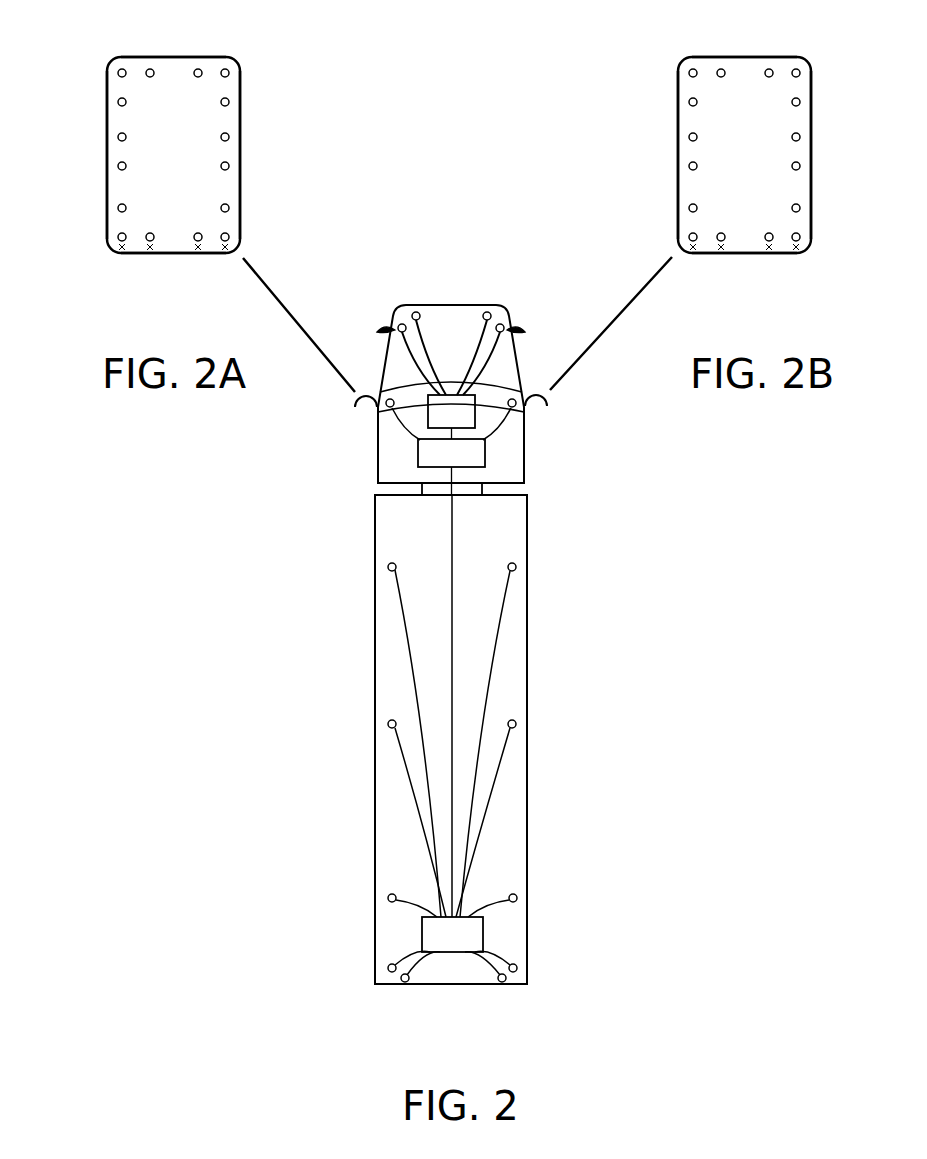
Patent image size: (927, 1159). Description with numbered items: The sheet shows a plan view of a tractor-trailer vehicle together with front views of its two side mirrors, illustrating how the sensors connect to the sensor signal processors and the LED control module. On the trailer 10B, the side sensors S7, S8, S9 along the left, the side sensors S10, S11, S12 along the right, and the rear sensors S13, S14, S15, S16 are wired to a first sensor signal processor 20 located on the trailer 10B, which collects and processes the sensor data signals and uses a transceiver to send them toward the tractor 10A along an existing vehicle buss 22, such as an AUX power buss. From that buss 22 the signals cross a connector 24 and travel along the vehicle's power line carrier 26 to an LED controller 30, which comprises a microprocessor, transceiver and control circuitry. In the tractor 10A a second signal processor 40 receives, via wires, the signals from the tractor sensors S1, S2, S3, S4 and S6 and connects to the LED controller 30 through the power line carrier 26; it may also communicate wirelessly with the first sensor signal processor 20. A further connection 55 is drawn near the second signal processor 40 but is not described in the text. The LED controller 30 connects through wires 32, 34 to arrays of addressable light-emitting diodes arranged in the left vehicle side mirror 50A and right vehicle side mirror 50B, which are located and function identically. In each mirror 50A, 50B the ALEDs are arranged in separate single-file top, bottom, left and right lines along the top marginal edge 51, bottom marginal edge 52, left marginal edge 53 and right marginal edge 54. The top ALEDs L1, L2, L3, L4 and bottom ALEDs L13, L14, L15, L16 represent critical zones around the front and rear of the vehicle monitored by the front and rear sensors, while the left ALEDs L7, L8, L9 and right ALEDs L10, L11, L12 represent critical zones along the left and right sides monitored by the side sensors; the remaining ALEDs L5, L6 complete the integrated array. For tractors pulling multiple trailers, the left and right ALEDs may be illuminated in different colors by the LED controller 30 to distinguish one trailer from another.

In FIG. 2A, the addressable light-emitting diode L1 is at (116, 72).
In FIG. 2B, the addressable light-emitting diode L1 is at (650, 53).
In FIG. 2A, the addressable light-emitting diode L2 is at (148, 68).
In FIG. 2B, the addressable light-emitting diode L2 is at (705, 44).
In FIG. 2A, the addressable light-emitting diode L3 is at (199, 68).
In FIG. 2B, the addressable light-emitting diode L3 is at (781, 44).
In FIG. 2A, the addressable light-emitting diode L4 is at (227, 68).
In FIG. 2B, the addressable light-emitting diode L4 is at (811, 44).
In FIG. 2A, the addressable light-emitting diode L5 is at (116, 102).
In FIG. 2B, the addressable light-emitting diode L5 is at (647, 86).
In FIG. 2A, the addressable light-emitting diode L6 is at (231, 101).
In FIG. 2B, the addressable light-emitting diode L6 is at (832, 82).
In FIG. 2A, the addressable light-emitting diode L7 is at (116, 137).
In FIG. 2B, the addressable light-emitting diode L7 is at (650, 131).
In FIG. 2A, the addressable light-emitting diode L8 is at (116, 166).
In FIG. 2B, the addressable light-emitting diode L8 is at (643, 161).
In FIG. 2A, the addressable light-emitting diode L9 is at (116, 208).
In FIG. 2B, the addressable light-emitting diode L9 is at (646, 198).
In FIG. 2A, the addressable light-emitting diode L10 is at (231, 137).
In FIG. 2B, the addressable light-emitting diode L10 is at (841, 125).
In FIG. 2A, the addressable light-emitting diode L11 is at (231, 165).
In FIG. 2B, the addressable light-emitting diode L11 is at (837, 154).
In FIG. 2A, the addressable light-emitting diode L12 is at (231, 208).
In FIG. 2B, the addressable light-emitting diode L12 is at (841, 193).
In FIG. 2A, the addressable light-emitting diode L13 is at (116, 237).
In FIG. 2B, the addressable light-emitting diode L13 is at (642, 227).
In FIG. 2A, the addressable light-emitting diode L14 is at (148, 246).
In FIG. 2B, the addressable light-emitting diode L14 is at (699, 272).
In FIG. 2A, the addressable light-emitting diode L15 is at (231, 238).
In FIG. 2B, the addressable light-emitting diode L15 is at (836, 245).
In FIG. 2A, the addressable light-emitting diode L16 is at (200, 246).
In FIG. 2B, the addressable light-emitting diode L16 is at (792, 270).
In FIG. 2A, the top marginal edge 51 is at (175, 56).
In FIG. 2B, the top marginal edge 51 is at (744, 30).
In FIG. 2A, the bottom marginal edge 52 is at (182, 254).
In FIG. 2B, the bottom marginal edge 52 is at (744, 282).
In FIG. 2A, the left marginal edge 53 is at (107, 120).
In FIG. 2B, the left marginal edge 53 is at (625, 155).
In FIG. 2A, the right marginal edge 54 is at (241, 112).
In FIG. 2B, the right marginal edge 54 is at (847, 155).
In FIG. 2A, the left vehicle side mirror 50A is at (201, 166).
In FIG. 2, the left vehicle side mirror 50A is at (352, 406).
In FIG. 2B, the right vehicle side mirror 50B is at (744, 155).
In FIG. 2, the right vehicle side mirror 50B is at (550, 402).
In FIG. 2, the tractor 10A is at (390, 470).
In FIG. 2, the trailer 10B is at (515, 647).
In FIG. 2, the first sensor signal processor 20 is at (478, 905).
In FIG. 2, the vehicle buss 22 is at (452, 538).
In FIG. 2, the connector 24 is at (440, 492).
In FIG. 2, the power line carrier 26 is at (512, 479).
In FIG. 2, the LED controller 30 is at (500, 455).
In FIG. 2, the wire 32 is at (407, 427).
In FIG. 2, the wire 34 is at (501, 428).
In FIG. 2, the second signal processor 40 is at (412, 383).
In FIG. 2, the wiring harness 55 is at (385, 414).
In FIG. 2, the tractor sensor S1 is at (400, 325).
In FIG. 2, the tractor sensor S2 is at (416, 312).
In FIG. 2, the tractor sensor S3 is at (487, 312).
In FIG. 2, the tractor sensor S4 is at (503, 325).
In FIG. 2, the tractor sensor S6 is at (525, 390).
In FIG. 2, the side sensor S7 is at (388, 566).
In FIG. 2, the side sensor S8 is at (388, 726).
In FIG. 2, the side sensor S9 is at (388, 897).
In FIG. 2, the side sensor S10 is at (516, 566).
In FIG. 2, the side sensor S11 is at (516, 725).
In FIG. 2, the side sensor S12 is at (517, 897).
In FIG. 2, the rear sensor S13 is at (388, 966).
In FIG. 2, the rear sensor S14 is at (403, 983).
In FIG. 2, the rear sensor S15 is at (517, 967).
In FIG. 2, the rear sensor S16 is at (506, 982).